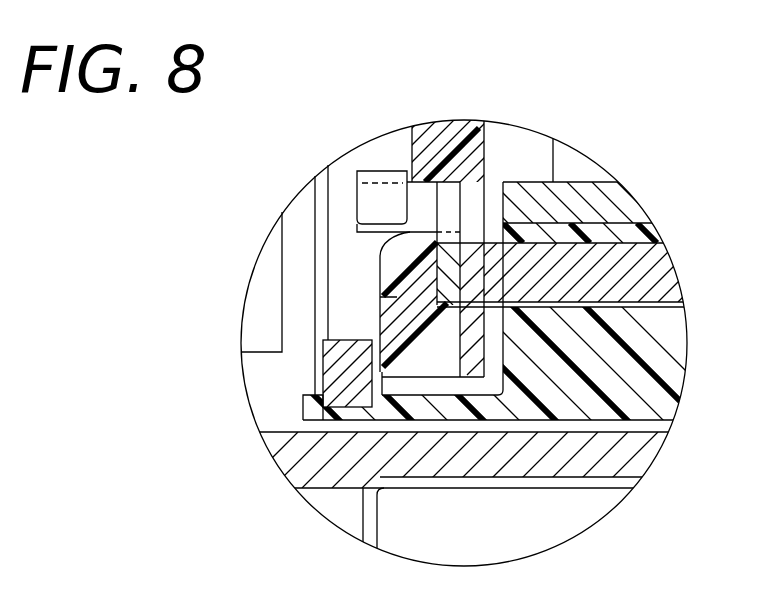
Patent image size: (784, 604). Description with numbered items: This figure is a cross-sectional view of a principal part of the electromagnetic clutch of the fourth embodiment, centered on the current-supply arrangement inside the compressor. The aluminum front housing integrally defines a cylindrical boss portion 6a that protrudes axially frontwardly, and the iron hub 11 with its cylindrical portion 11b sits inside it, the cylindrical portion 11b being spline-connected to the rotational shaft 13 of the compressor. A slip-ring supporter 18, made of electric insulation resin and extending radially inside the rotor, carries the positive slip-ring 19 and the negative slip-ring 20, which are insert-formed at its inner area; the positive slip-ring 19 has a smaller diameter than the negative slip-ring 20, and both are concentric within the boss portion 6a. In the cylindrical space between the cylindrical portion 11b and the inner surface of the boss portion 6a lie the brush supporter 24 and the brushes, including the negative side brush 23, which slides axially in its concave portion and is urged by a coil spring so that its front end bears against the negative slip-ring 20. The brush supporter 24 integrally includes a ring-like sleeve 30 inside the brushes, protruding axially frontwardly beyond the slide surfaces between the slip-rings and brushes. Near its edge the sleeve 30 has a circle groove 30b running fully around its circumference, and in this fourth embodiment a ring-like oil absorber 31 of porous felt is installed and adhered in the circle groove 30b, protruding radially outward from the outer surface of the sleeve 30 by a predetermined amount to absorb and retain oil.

The boss portion 6a is at (577, 208).
The negative side brush 23 is at (603, 261).
The brush supporter 24 is at (648, 368).
The negative slip-ring 20 is at (413, 264).
The slip-ring supporter 18 is at (365, 297).
The positive slip-ring 19 is at (458, 336).
The oil absorber 31 is at (340, 380).
The hub 11 is at (306, 461).
The cylindrical portion 11b is at (612, 454).
The circle groove 30b is at (297, 477).
The sleeve 30 is at (360, 531).
The rotational shaft 13 is at (572, 512).